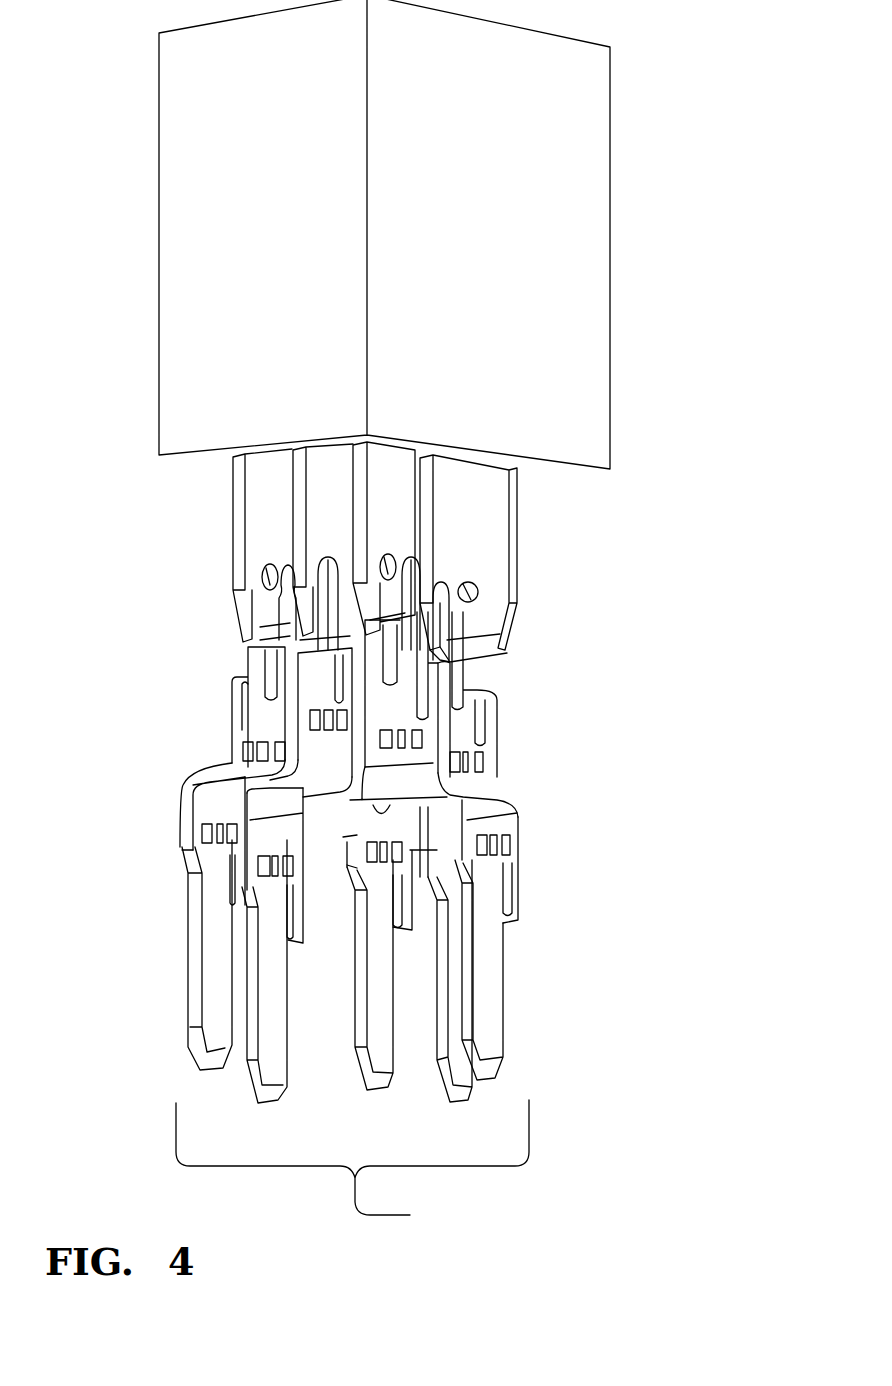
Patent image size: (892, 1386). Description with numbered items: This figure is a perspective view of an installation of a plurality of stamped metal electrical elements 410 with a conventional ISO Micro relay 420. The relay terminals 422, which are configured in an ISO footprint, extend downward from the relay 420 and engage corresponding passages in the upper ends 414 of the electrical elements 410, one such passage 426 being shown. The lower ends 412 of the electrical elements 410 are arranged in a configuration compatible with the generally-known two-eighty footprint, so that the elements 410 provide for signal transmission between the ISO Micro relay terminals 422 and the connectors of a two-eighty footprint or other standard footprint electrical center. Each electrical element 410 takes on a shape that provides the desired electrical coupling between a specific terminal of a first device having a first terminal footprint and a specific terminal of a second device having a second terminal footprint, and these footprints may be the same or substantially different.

The stamped metal electrical elements 410 is at (352, 1164).
The lower ends 412 is at (265, 1040).
The upper ends 414 is at (392, 697).
The ISO Micro relay 420 is at (587, 215).
The relay terminals 422 is at (262, 543).
The passage 426 is at (452, 638).